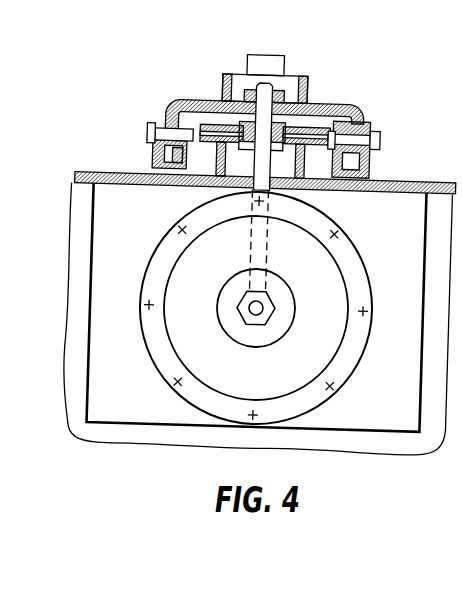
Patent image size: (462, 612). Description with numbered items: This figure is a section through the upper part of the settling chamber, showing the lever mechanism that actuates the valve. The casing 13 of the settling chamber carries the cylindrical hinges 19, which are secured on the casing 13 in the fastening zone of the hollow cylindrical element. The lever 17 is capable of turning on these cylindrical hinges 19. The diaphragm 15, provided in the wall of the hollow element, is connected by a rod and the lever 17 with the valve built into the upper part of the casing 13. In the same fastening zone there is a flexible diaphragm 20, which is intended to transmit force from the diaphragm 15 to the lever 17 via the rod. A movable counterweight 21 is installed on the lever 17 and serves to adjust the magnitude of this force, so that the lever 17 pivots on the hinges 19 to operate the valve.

The casing 13 is at (408, 181).
The diaphragm 15 is at (323, 346).
The lever 17 is at (327, 104).
The cylindrical hinges 19 is at (152, 130).
The flexible diaphragm 20 is at (318, 128).
The movable counterweight 21 is at (271, 64).